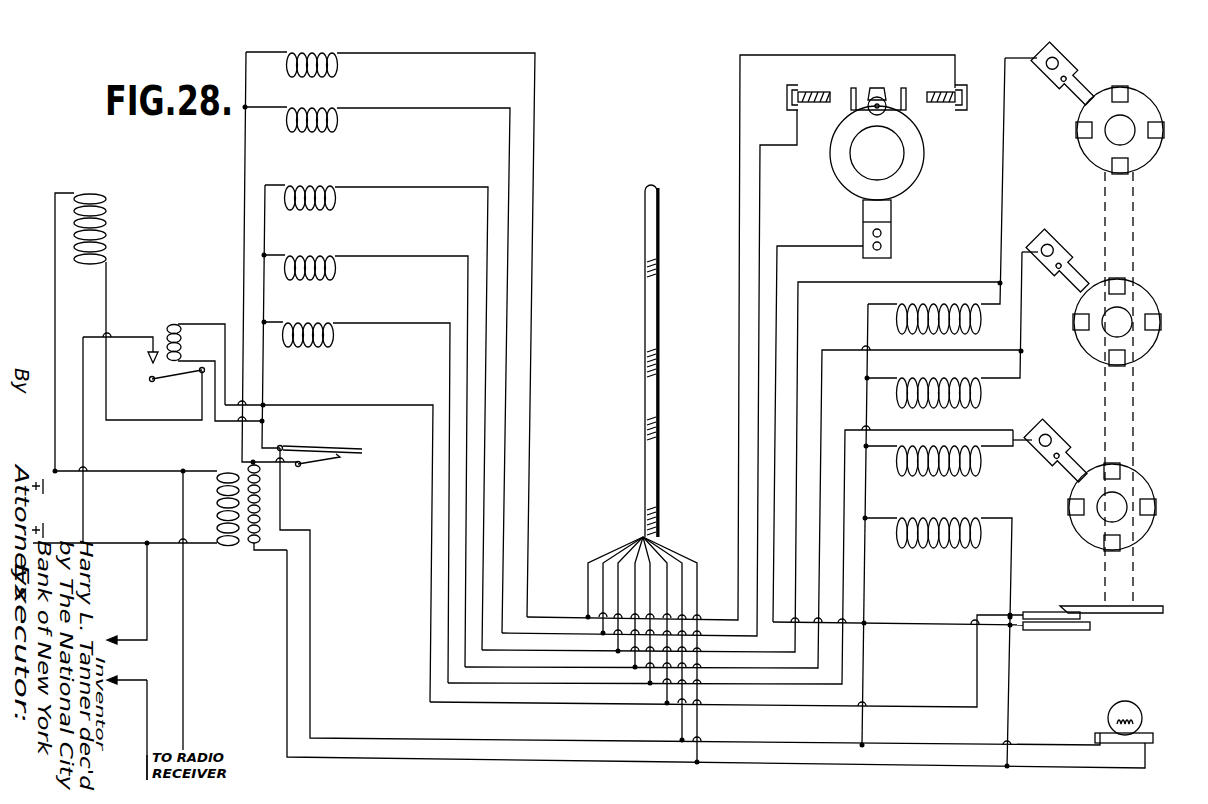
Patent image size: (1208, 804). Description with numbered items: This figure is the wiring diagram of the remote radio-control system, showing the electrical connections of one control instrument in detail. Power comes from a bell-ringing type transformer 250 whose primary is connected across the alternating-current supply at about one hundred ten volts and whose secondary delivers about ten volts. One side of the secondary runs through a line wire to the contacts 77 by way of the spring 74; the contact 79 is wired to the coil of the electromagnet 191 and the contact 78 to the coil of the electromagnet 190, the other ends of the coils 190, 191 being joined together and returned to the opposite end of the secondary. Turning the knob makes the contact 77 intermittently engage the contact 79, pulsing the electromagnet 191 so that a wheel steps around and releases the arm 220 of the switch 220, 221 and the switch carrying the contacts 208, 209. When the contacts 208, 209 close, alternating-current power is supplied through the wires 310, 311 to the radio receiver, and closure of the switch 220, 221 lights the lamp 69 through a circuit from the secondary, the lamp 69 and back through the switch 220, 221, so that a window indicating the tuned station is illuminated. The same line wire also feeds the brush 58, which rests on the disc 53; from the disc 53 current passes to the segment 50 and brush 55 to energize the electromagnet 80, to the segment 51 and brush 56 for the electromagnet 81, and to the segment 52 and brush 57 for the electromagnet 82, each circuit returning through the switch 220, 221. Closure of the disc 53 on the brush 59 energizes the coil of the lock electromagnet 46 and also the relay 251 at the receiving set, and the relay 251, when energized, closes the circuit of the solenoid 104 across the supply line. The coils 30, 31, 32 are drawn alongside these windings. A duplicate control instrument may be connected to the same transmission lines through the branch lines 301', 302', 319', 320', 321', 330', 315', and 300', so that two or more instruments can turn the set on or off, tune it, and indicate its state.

The solenoid 104 is at (108, 236).
The relay 251 is at (178, 323).
The switch arm 220 is at (334, 447).
The switch contact 221 is at (333, 460).
The transformer 250 is at (238, 550).
The contact 208 is at (131, 641).
The contact 209 is at (128, 684).
The wire 310 is at (147, 760).
The wire 311 is at (183, 690).
The electromagnet 191 is at (337, 65).
The electromagnet 190 is at (337, 120).
The electromagnet 80 is at (335, 198).
The electromagnet 81 is at (335, 268).
The electromagnet 82 is at (333, 335).
The line 301' is at (605, 560).
The line 302' is at (593, 577).
The line 319' is at (587, 593).
The line 320' is at (680, 563).
The line 321' is at (686, 584).
The line 330' is at (689, 606).
The line 315' is at (690, 636).
The line 300' is at (691, 649).
The spring 74 is at (908, 170).
The contact 77 is at (876, 96).
The contact 78 is at (812, 92).
The contact 79 is at (942, 105).
The brush 55 is at (1085, 92).
The brush 56 is at (1092, 285).
The brush 57 is at (1083, 476).
The segment 50 is at (1132, 105).
The segment 51 is at (1150, 300).
The segment 52 is at (1155, 517).
The disc 53 is at (1155, 606).
The brush 58 is at (1045, 631).
The brush 59 is at (1035, 612).
The lamp 69 is at (1140, 707).
The electromagnet coil 30 is at (940, 306).
The electromagnet coil 31 is at (932, 378).
The electromagnet coil 32 is at (930, 438).
The lock electromagnet 46 is at (928, 518).